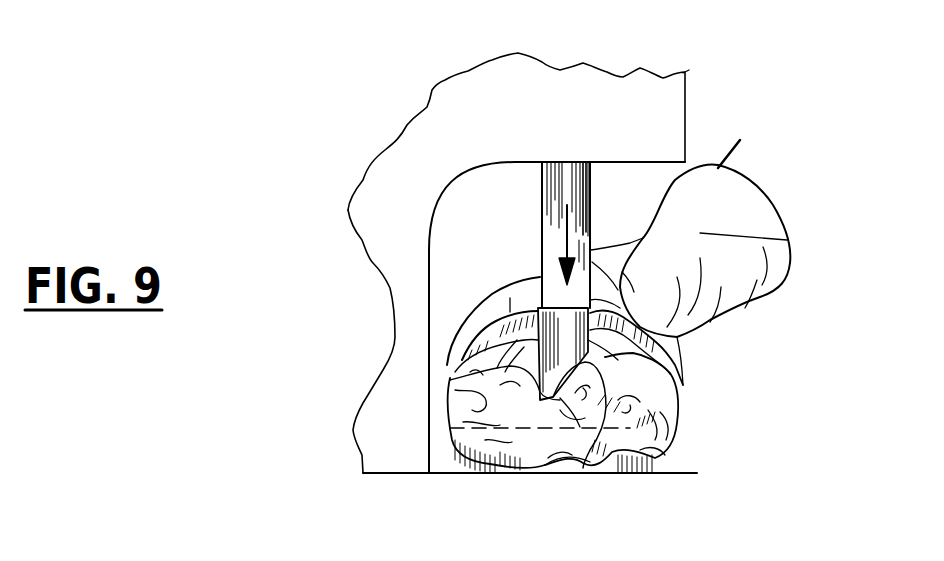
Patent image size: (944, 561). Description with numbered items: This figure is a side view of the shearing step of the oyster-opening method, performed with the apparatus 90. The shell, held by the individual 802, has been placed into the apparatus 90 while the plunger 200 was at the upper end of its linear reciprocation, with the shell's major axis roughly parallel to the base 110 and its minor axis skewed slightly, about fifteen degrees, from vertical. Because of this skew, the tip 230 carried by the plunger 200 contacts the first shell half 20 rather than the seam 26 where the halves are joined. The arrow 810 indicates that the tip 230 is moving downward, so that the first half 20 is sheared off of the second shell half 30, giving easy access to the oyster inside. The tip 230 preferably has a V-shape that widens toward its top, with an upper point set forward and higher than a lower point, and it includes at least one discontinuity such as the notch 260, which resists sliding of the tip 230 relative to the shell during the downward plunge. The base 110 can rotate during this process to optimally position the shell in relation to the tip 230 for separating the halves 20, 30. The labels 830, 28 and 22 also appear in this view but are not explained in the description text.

The surgical procedure 830 is at (248, 88).
The apparatus 90 is at (535, 119).
The plunger 200 is at (565, 185).
The arrow 810 is at (567, 235).
The hand 28 is at (594, 248).
The individual 802 is at (823, 223).
The tip 230 is at (540, 285).
The seam 26 is at (450, 380).
The first shell half 20 is at (677, 422).
The second shell half 30 is at (670, 363).
The notch 260 is at (580, 465).
The base 110 is at (470, 473).
The support surface 22 is at (535, 498).